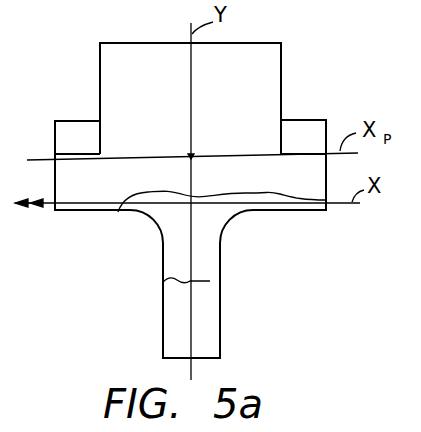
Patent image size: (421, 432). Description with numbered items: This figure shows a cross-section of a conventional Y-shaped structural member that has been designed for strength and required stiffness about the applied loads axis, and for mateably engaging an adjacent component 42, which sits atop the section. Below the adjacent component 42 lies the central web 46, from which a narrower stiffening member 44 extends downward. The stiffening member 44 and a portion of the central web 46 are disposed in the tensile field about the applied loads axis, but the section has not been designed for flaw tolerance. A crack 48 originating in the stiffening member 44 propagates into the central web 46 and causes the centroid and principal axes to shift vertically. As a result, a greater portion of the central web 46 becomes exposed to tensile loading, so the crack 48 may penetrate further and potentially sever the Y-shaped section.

The adjacent component 42 is at (232, 107).
The stiffening member 44 is at (176, 315).
The central web 46 is at (162, 182).
The crack 48 is at (210, 280).